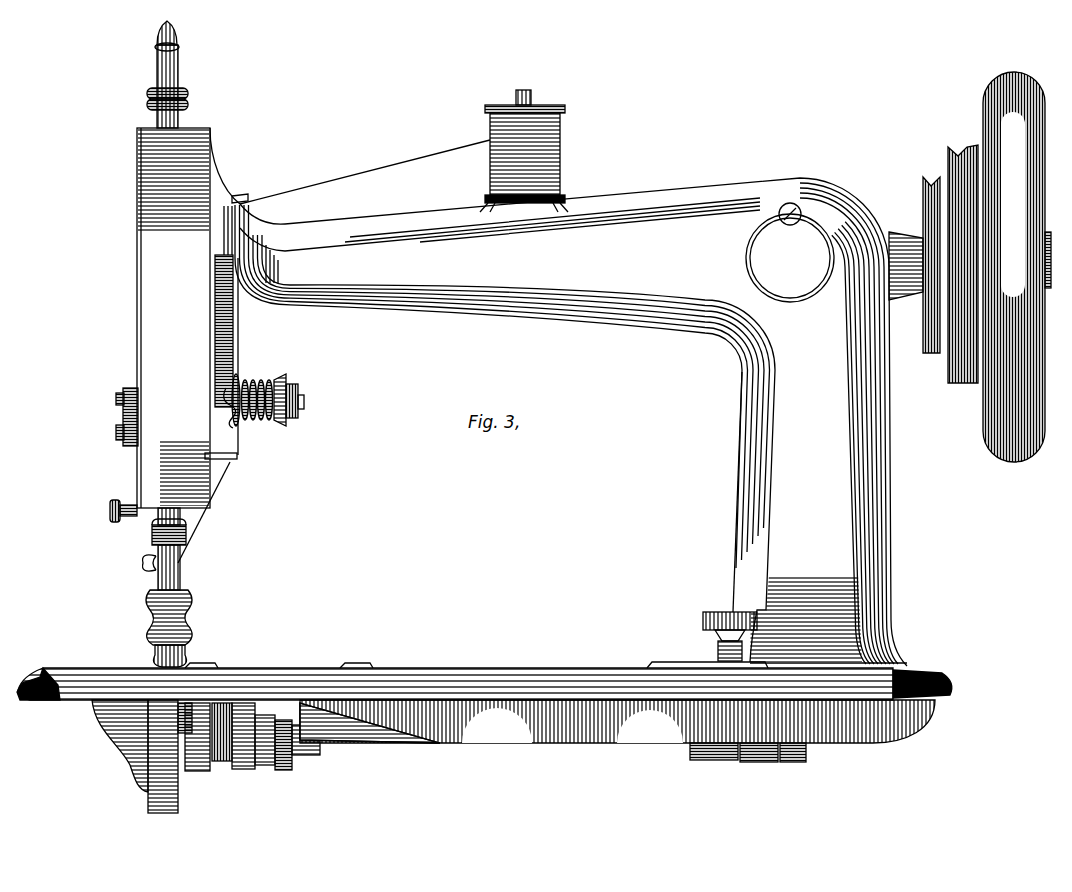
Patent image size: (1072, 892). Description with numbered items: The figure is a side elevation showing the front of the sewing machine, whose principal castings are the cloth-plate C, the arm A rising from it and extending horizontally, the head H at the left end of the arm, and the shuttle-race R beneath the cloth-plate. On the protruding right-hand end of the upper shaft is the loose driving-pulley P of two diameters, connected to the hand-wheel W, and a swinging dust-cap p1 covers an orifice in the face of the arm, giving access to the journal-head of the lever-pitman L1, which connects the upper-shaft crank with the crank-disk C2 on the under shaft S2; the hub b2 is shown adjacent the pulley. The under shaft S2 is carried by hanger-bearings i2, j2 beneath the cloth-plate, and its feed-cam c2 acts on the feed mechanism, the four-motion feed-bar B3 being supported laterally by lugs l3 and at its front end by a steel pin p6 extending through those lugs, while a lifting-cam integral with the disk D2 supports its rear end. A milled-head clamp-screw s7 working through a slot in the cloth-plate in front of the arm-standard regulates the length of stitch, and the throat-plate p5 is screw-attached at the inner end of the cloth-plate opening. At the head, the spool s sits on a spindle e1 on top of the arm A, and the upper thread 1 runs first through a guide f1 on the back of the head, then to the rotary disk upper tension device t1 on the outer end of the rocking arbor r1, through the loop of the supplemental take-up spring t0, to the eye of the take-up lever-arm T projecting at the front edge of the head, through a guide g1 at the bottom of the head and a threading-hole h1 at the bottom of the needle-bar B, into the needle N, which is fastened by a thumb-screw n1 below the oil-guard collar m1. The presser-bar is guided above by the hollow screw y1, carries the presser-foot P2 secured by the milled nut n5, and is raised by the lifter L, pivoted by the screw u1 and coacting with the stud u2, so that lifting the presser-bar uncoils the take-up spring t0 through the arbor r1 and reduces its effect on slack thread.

The arm A is at (565, 422).
The head H is at (188, 318).
The needle-bar B is at (158, 72).
The hollow screw y1 is at (222, 437).
The guide f1 is at (241, 189).
The spool s is at (527, 158).
The spindle e1 is at (536, 99).
The upper thread 1 is at (143, 641).
The swinging dust-cap p1 is at (790, 252).
The hub b2 is at (906, 255).
The loose driving-pulley P is at (950, 264).
The balance wheel W is at (1017, 267).
The take-up lever-arm T is at (222, 410).
The upper tension device t1 is at (246, 395).
The supplemental take-up t0 is at (259, 396).
The rocking arbor r1 is at (294, 400).
The guide g1 is at (227, 467).
The threading-hole h1 is at (204, 514).
The bracket u2 is at (117, 415).
The pivotal screw u1 is at (110, 434).
The lifter L is at (123, 499).
The needle N is at (146, 590).
The oil-guard collar m1 is at (154, 534).
The thumb-screw n1 is at (138, 561).
The milled nut n5 is at (180, 617).
The presser-foot P2 is at (181, 648).
The throat-plate p5 is at (201, 661).
The cloth-plate C is at (484, 698).
The clamp-screw s7 is at (722, 516).
The shuttle-race R is at (120, 746).
The disk D2 is at (176, 756).
The feed-bar B3 is at (218, 762).
The lugs l3 is at (220, 737).
The steel pin p6 is at (193, 718).
The hanger-bearing i2 is at (262, 750).
The feed-cam c2 is at (306, 755).
The under shaft S2 is at (368, 742).
The hanger-bearing j2 is at (714, 762).
The crank-disk C2 is at (759, 762).
The lever-pitman L1 is at (794, 758).